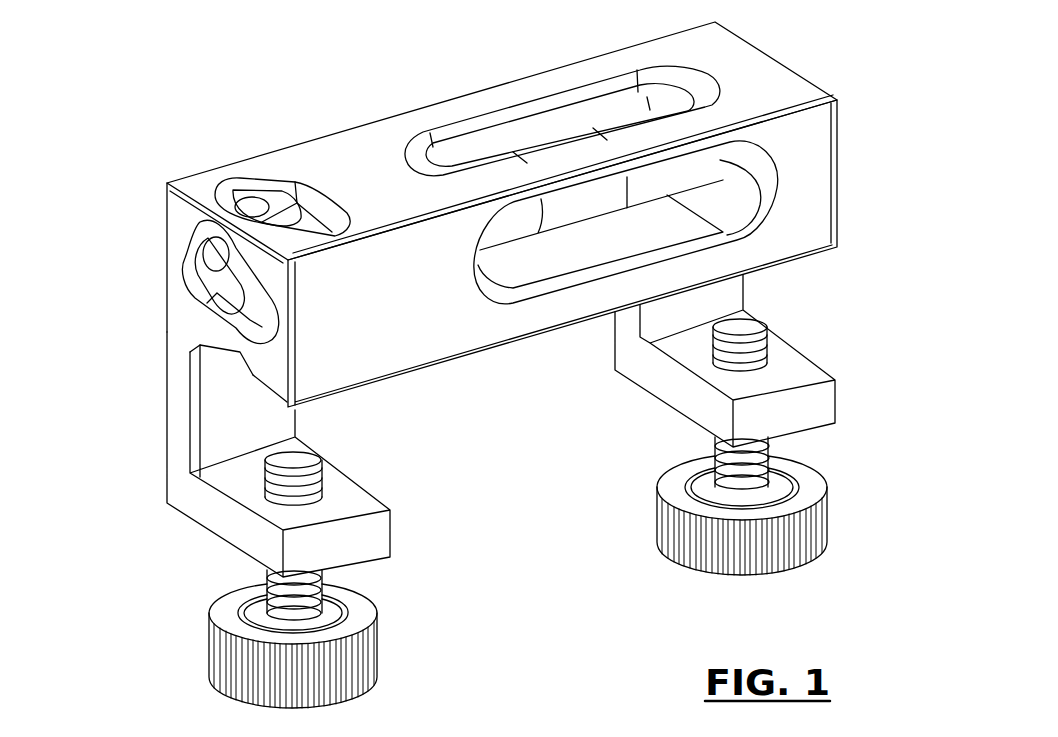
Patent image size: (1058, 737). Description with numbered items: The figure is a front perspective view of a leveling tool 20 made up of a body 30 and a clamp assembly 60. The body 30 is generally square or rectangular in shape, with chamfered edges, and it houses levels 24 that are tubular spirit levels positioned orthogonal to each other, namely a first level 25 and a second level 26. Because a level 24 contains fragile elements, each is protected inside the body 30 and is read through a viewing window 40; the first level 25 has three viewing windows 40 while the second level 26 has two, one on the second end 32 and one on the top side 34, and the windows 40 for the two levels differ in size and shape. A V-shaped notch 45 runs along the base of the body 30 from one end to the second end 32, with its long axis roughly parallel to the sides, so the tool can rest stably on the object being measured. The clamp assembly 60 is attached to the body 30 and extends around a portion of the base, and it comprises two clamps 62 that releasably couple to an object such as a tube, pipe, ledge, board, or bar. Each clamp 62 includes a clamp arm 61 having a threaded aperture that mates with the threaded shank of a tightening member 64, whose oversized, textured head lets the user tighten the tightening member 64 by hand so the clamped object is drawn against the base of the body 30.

The leveling tool 20 is at (908, 118).
The level 24 is at (720, 158).
The first level 25 is at (708, 177).
The second level 26 is at (223, 267).
The body 30 is at (770, 82).
The second end 32 is at (190, 316).
The top side 34 is at (358, 170).
The viewing window 40 is at (247, 180).
The notch 45 is at (233, 362).
The clamp assembly 60 is at (897, 359).
The clamp arm 61 is at (833, 403).
The clamp 62 is at (622, 562).
The tightening member 64 is at (820, 477).